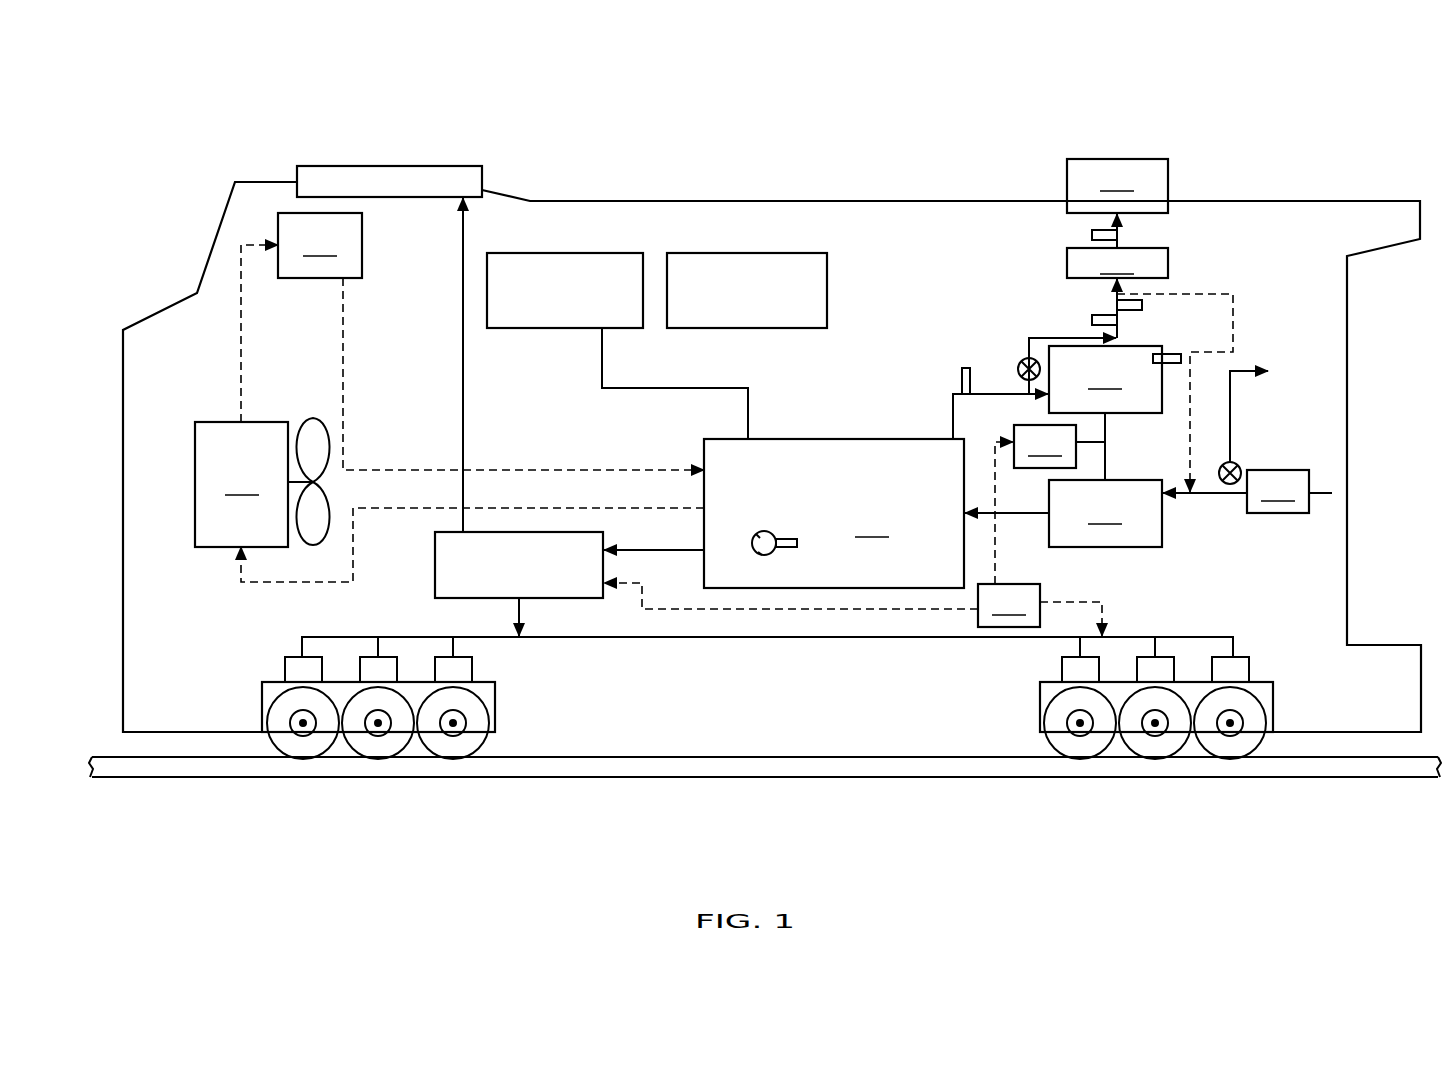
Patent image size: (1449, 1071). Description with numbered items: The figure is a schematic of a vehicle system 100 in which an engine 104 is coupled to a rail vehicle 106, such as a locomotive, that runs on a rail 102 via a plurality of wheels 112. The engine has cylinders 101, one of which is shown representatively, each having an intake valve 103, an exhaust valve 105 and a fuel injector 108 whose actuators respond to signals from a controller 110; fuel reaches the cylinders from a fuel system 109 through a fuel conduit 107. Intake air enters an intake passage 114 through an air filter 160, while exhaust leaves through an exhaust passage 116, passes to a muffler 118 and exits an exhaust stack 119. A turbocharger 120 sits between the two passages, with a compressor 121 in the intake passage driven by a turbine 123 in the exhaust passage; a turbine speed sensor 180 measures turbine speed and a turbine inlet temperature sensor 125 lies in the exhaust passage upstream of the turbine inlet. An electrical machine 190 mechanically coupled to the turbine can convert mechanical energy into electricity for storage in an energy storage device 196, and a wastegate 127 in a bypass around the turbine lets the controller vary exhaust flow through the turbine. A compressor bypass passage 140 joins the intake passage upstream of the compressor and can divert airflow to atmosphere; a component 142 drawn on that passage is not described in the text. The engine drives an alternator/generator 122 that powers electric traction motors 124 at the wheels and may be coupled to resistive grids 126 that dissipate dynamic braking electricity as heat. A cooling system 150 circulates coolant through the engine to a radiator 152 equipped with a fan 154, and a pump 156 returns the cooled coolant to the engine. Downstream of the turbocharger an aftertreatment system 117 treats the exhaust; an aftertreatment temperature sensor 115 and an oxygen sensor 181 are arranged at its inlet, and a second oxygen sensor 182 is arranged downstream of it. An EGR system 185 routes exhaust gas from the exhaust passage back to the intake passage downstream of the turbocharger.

The vehicle system 100 is at (1372, 90).
The cylinder 101 is at (770, 532).
The rail 102 is at (1345, 778).
The intake valve 103 is at (758, 533).
The engine 104 is at (834, 513).
The exhaust valve 105 is at (758, 552).
The vehicle 106 is at (930, 201).
The fuel conduit 107 is at (602, 372).
The fuel injector 108 is at (788, 547).
The fuel system 109 is at (563, 253).
The controller 110 is at (714, 253).
The wheels 112 is at (482, 710).
The intake passage 114 is at (1049, 515).
The aftertreatment temperature sensor 115 is at (1092, 320).
The exhaust passage 116 is at (953, 438).
The aftertreatment system 117 is at (1117, 293).
The muffler 118 is at (1168, 213).
The exhaust stack 119 is at (1117, 186).
The turbocharger 120 is at (1132, 578).
The compressor 121 is at (1105, 513).
The alternator/generator 122 is at (435, 566).
The turbine 123 is at (1105, 413).
The electric traction motors 124 is at (476, 675).
The turbine inlet temperature sensor 125 is at (962, 380).
The resistive grids 126 is at (463, 166).
The wastegate 127 is at (1026, 359).
The compressor bypass passage 140 is at (1232, 371).
The intake valve 142 is at (1219, 472).
The cooling system 150 is at (220, 380).
The radiator 152 is at (449, 502).
The fan 154 is at (316, 422).
The pump 156 is at (472, 341).
The air filter 160 is at (1278, 491).
The turbine speed sensor 180 is at (1170, 354).
The AFR sensor or oxygen sensor 181 is at (1142, 305).
The AFR sensor or oxygen sensor 182 is at (1092, 236).
The EGR system 185 is at (1233, 294).
The electrical machine 190 is at (1050, 504).
The energy storage device 196 is at (1040, 610).